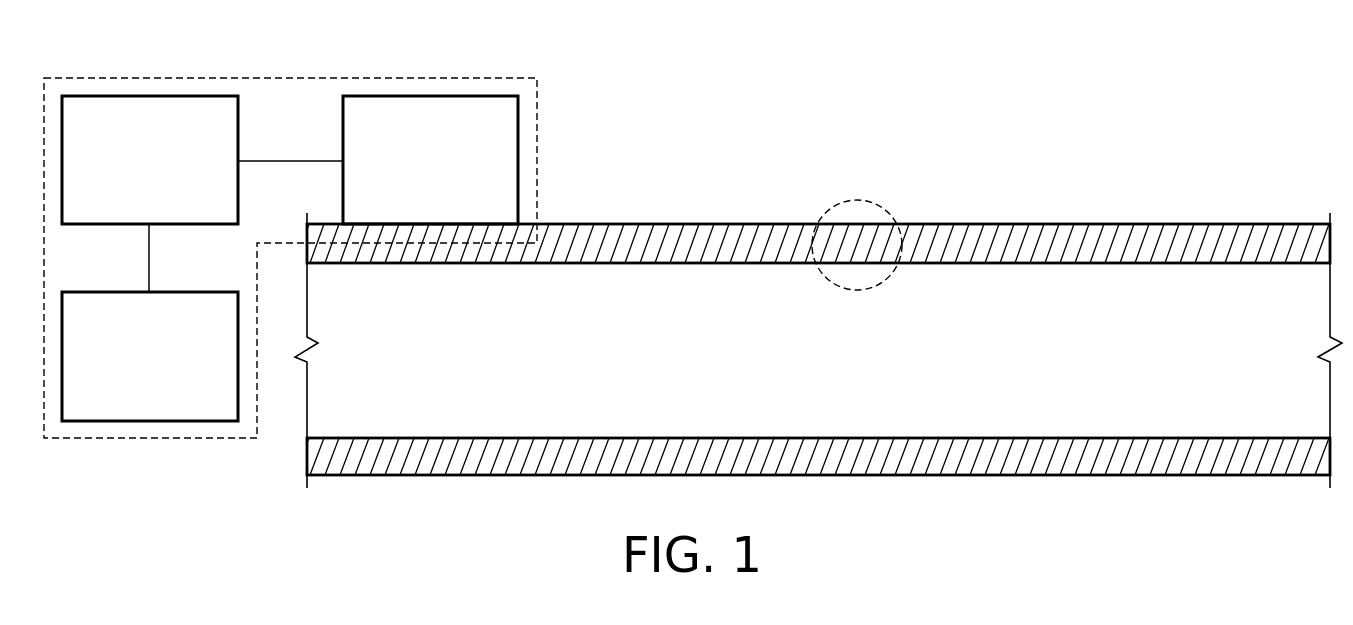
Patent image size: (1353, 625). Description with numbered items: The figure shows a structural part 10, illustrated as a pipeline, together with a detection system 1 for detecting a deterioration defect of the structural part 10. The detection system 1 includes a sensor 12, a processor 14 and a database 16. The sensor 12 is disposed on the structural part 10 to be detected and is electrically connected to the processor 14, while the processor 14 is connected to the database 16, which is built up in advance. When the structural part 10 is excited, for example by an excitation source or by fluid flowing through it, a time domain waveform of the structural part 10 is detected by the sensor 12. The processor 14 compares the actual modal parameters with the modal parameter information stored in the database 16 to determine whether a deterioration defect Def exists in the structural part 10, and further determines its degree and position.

The detection system 1 is at (74, 78).
The structural part 10 is at (1155, 223).
The sensor 12 is at (416, 173).
The processor 14 is at (135, 173).
The database 16 is at (135, 370).
The deterioration defect Def is at (838, 200).